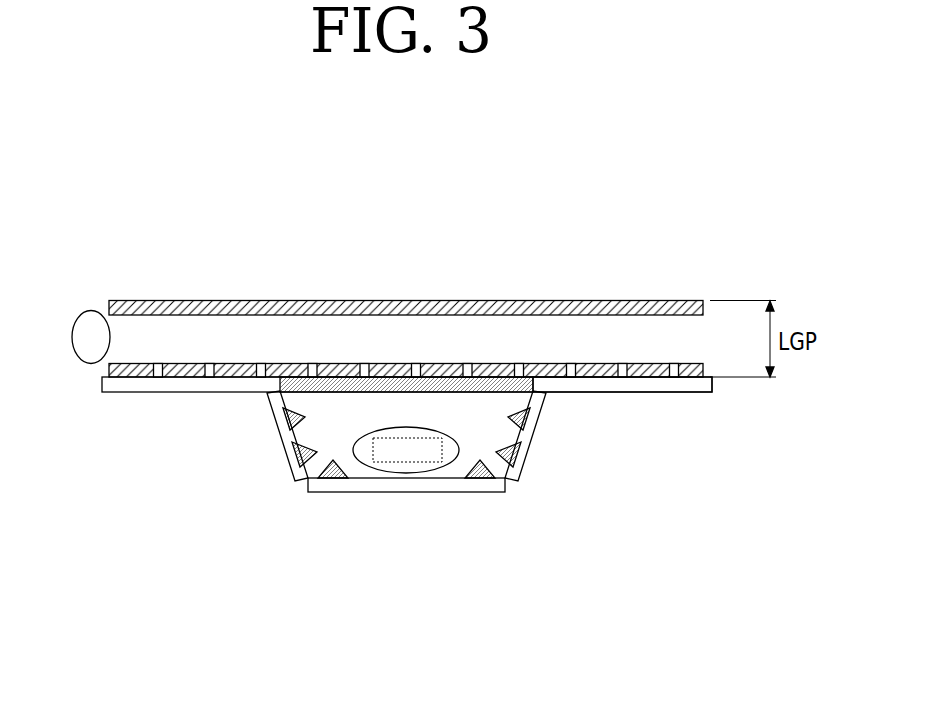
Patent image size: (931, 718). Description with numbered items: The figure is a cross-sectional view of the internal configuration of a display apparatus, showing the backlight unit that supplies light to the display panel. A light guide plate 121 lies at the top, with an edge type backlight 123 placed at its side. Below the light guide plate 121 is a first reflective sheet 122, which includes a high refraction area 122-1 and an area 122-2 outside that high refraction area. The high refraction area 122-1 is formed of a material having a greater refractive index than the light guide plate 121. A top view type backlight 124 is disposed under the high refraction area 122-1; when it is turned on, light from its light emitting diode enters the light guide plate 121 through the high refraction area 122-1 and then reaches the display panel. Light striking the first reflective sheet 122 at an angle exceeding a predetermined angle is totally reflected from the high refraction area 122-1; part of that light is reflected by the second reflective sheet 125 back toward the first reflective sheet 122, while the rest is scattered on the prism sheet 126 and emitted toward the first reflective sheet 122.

The light guide plate 121 is at (698, 338).
The first reflective sheet 122 is at (400, 415).
The high refraction area 122-1 is at (303, 387).
The area outside the high refraction area 122-2 is at (605, 385).
The edge type backlight 123 is at (95, 311).
The top view type backlight 124 is at (450, 466).
The second reflective sheet 125 is at (358, 488).
The prism sheet 126 is at (305, 480).